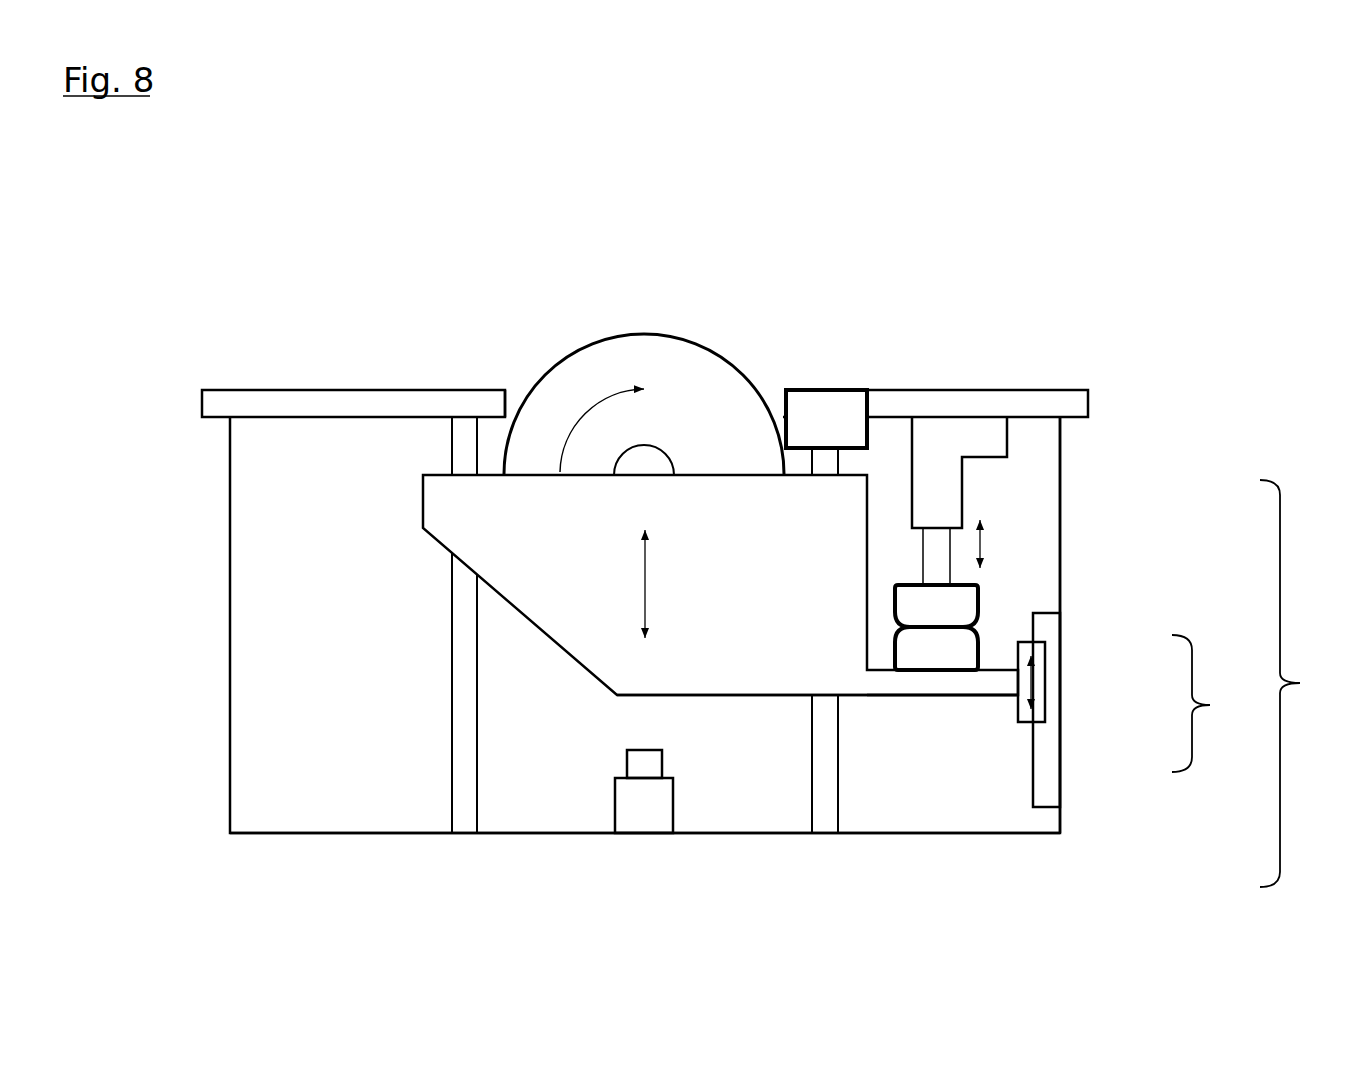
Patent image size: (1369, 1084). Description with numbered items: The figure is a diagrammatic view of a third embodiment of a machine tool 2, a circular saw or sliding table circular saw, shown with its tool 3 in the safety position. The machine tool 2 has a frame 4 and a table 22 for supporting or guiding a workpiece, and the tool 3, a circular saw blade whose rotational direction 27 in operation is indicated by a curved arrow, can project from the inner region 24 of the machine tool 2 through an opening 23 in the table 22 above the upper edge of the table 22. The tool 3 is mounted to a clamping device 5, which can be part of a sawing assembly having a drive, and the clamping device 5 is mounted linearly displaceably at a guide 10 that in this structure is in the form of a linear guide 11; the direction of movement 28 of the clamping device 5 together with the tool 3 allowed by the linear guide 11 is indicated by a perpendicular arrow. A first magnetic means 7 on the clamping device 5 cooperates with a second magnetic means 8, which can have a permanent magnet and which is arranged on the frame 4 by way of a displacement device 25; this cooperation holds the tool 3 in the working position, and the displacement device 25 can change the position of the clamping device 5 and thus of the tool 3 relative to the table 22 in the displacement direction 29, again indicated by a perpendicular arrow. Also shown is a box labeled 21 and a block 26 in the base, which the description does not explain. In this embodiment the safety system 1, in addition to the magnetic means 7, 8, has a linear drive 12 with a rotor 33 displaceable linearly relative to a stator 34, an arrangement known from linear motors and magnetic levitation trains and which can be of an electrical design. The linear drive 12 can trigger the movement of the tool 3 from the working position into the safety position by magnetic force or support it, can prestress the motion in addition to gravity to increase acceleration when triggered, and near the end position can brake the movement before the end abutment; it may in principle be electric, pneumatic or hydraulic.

The safety system 1 is at (1300, 683).
The machine tool 2 is at (872, 222).
The tool 3 is at (588, 367).
The frame 4 is at (227, 567).
The clamping device 5 is at (780, 648).
The first magnetic means 7 is at (960, 640).
The second magnetic means 8 is at (955, 603).
The guide 10 is at (877, 715).
The linear guide 11 is at (823, 737).
The linear drive 12 is at (1219, 703).
The control unit 21 is at (845, 437).
The table 22 is at (337, 385).
The opening 23 is at (518, 378).
The inner region 24 is at (303, 798).
The displacement device 25 is at (945, 437).
The drive motor 26 is at (645, 810).
The rotational direction 27 is at (577, 427).
The direction of movement 28 is at (645, 580).
The displacement direction 29 is at (985, 540).
The rotor 33 is at (1037, 710).
The stator 34 is at (1048, 765).